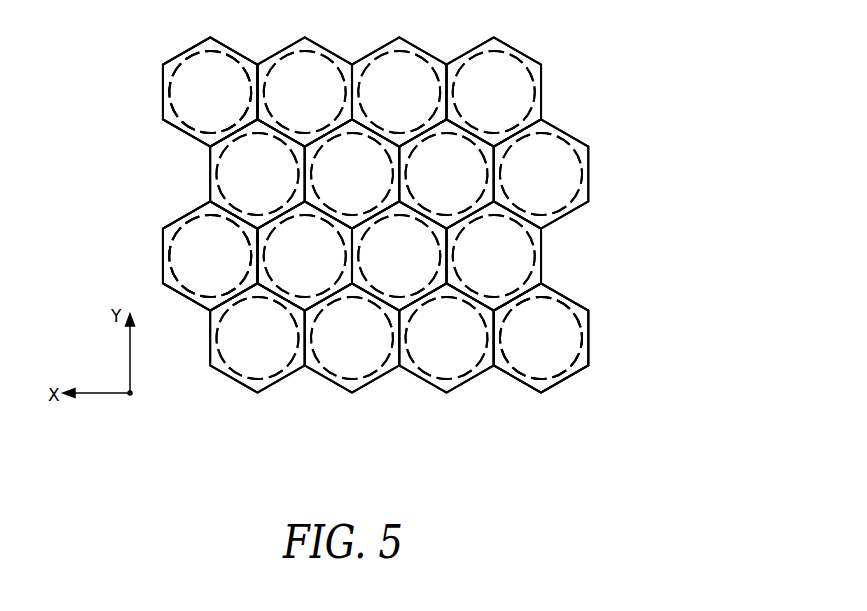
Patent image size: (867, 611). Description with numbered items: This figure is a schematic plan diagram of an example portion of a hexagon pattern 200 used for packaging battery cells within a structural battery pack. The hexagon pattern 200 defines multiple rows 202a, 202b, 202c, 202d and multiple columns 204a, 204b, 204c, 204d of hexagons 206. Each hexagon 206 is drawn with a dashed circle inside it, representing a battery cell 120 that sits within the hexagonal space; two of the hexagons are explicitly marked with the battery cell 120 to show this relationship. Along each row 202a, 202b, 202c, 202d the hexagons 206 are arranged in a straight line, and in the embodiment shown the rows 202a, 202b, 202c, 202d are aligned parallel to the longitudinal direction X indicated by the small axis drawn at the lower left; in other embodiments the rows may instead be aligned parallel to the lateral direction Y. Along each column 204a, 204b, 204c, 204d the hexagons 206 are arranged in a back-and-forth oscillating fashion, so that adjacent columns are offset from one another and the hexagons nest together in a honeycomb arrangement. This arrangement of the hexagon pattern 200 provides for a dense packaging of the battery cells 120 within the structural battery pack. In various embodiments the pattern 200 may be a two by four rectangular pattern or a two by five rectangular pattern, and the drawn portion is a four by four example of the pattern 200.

The hexagon pattern 200 is at (128, 64).
The battery cell 120 is at (231, 104).
The hexagon 206 is at (168, 220).
The row 202a is at (234, 261).
The row 202b is at (328, 261).
The row 202c is at (423, 261).
The row 202d is at (517, 261).
The column 204a is at (461, 337).
The column 204b is at (437, 255).
The column 204c is at (461, 173).
The column 204d is at (438, 91).